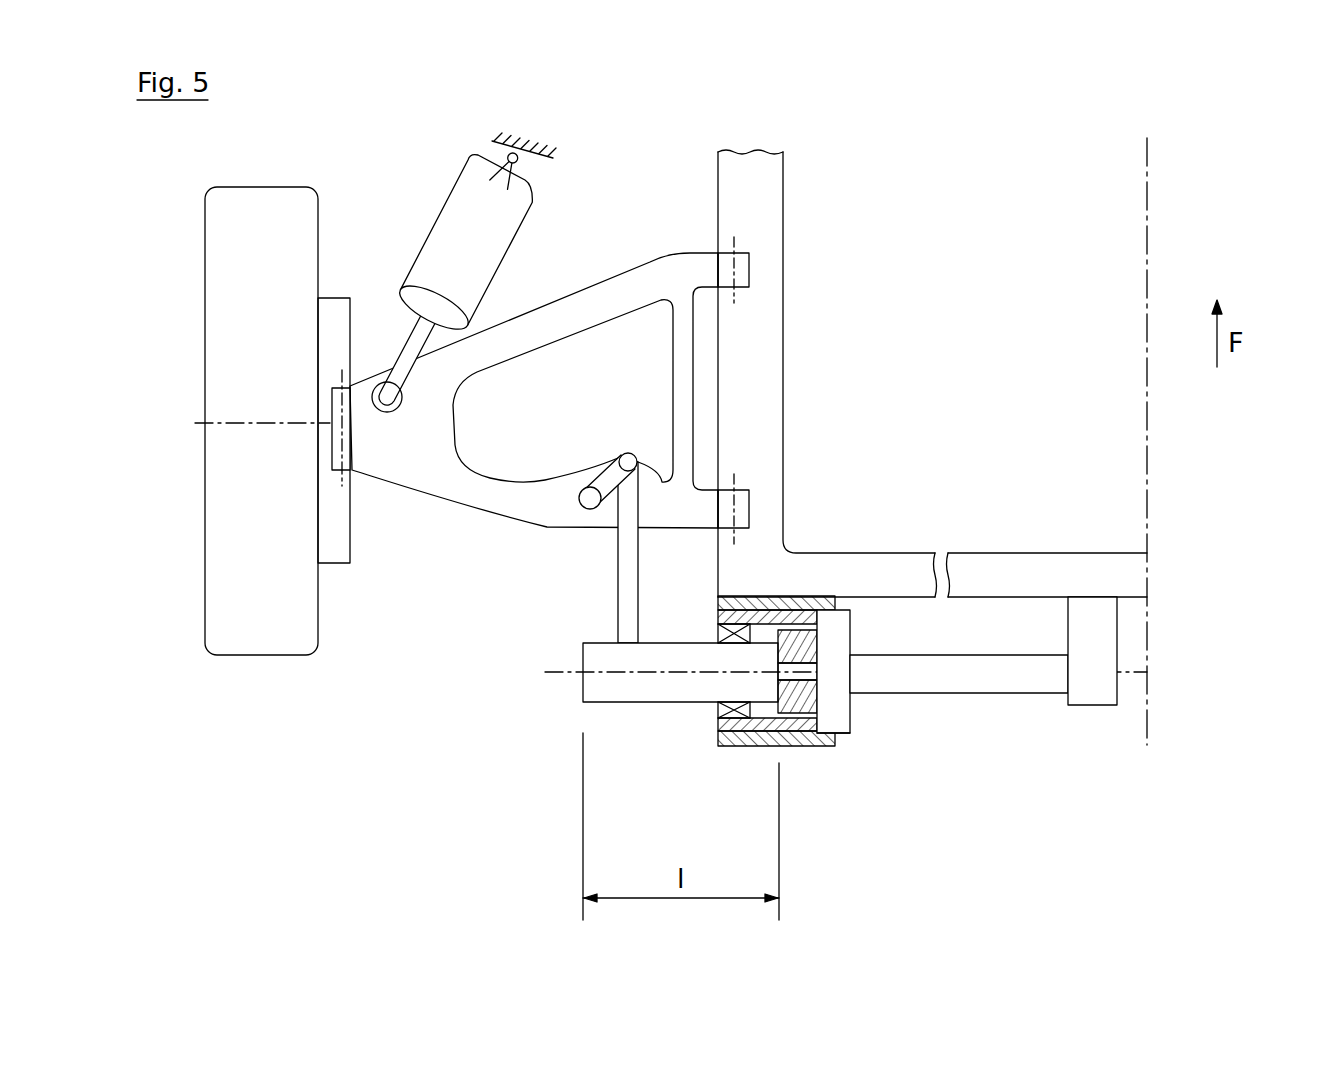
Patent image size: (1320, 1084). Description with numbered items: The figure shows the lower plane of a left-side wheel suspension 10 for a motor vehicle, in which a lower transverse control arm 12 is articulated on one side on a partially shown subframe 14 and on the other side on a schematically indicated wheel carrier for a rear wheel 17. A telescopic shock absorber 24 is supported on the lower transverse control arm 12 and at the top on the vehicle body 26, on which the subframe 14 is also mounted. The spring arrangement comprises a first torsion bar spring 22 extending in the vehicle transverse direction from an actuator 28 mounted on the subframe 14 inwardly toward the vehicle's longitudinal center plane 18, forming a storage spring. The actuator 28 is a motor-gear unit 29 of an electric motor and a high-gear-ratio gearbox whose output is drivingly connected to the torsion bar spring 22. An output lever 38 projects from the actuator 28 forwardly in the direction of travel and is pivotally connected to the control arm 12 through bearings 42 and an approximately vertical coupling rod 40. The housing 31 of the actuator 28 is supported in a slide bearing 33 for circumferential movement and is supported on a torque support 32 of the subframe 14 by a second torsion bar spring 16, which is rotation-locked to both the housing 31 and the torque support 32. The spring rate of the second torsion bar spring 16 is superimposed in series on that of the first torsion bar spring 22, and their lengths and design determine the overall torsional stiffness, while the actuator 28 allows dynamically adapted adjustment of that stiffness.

The wheel suspension 10 is at (619, 230).
The lower transverse control arm 12 is at (566, 337).
The subframe 14 is at (853, 552).
The second torsion bar spring 16 is at (1035, 694).
The rear wheel 17 is at (279, 294).
The vehicle longitudinal center plane 18 is at (1148, 223).
The first torsion bar spring 22 is at (628, 703).
The telescopic shock absorber 24 is at (392, 310).
The vehicle body 26 is at (505, 135).
The actuator 28 is at (860, 635).
The motor-gear unit 29 is at (812, 715).
The housing 31 is at (852, 730).
The torque support 32 is at (1098, 668).
The slide bearing 33 is at (708, 736).
The output lever 38 is at (618, 608).
The coupling rod 40 is at (617, 455).
The bearings 42 is at (628, 452).